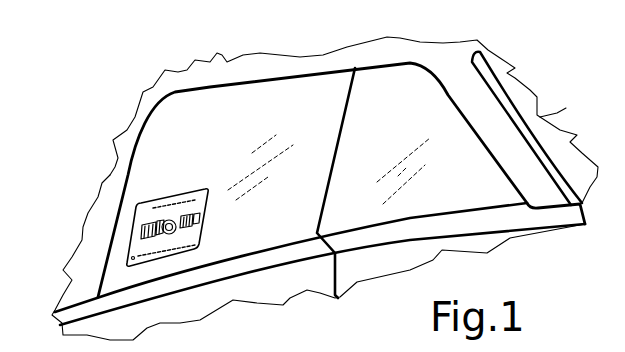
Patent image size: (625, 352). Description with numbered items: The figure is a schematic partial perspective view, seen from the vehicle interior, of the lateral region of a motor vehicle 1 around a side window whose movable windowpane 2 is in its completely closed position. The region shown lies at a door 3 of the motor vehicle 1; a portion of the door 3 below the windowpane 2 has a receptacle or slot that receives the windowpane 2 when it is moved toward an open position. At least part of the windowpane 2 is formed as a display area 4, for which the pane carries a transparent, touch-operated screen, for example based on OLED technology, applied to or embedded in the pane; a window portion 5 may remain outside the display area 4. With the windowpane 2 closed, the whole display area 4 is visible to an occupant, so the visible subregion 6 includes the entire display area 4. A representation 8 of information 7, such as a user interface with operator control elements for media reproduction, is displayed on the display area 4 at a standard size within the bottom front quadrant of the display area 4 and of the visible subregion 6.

The motor vehicle 1 is at (497, 124).
The windowpane 2 is at (273, 103).
The door 3 is at (273, 258).
The display area 4 is at (329, 183).
The window portion 5 is at (403, 78).
The visible subregion 6 is at (329, 183).
The information 7 is at (138, 227).
The representation 8 is at (167, 227).